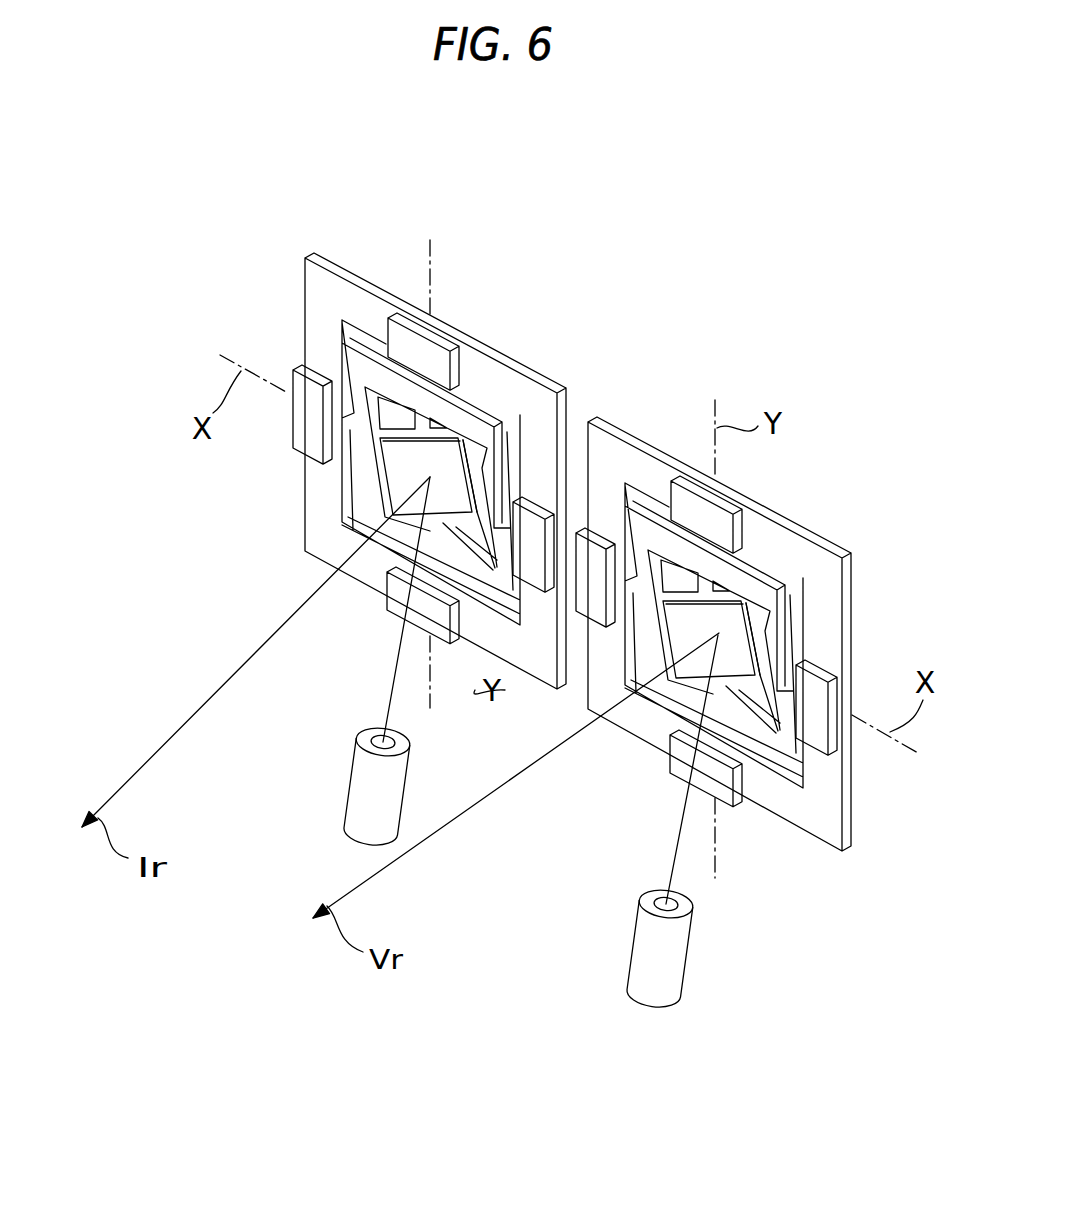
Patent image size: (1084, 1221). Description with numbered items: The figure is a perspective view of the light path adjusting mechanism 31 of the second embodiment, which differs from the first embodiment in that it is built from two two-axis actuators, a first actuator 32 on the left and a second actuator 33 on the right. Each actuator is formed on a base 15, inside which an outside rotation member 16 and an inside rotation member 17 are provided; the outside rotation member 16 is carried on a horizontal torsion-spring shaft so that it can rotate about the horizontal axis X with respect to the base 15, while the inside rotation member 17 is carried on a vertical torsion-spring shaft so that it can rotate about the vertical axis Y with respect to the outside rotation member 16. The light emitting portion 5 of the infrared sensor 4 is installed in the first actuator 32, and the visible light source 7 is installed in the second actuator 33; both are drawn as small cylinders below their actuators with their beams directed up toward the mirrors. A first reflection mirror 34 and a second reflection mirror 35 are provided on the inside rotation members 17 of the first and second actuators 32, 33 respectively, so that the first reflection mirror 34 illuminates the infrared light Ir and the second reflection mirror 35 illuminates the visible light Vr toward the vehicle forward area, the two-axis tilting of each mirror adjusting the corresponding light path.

The infrared sensor 4 is at (338, 764).
The light emitting portion 5 is at (360, 796).
The visible light source 7 is at (672, 956).
The base 15 is at (315, 311).
The outside rotation member 16 is at (375, 348).
The inside rotation member 17 is at (377, 470).
The light path adjusting mechanism 31 is at (567, 540).
The first actuator 32 is at (483, 348).
The second actuator 33 is at (658, 432).
The first reflection mirror 34 is at (412, 507).
The second reflection mirror 35 is at (695, 670).